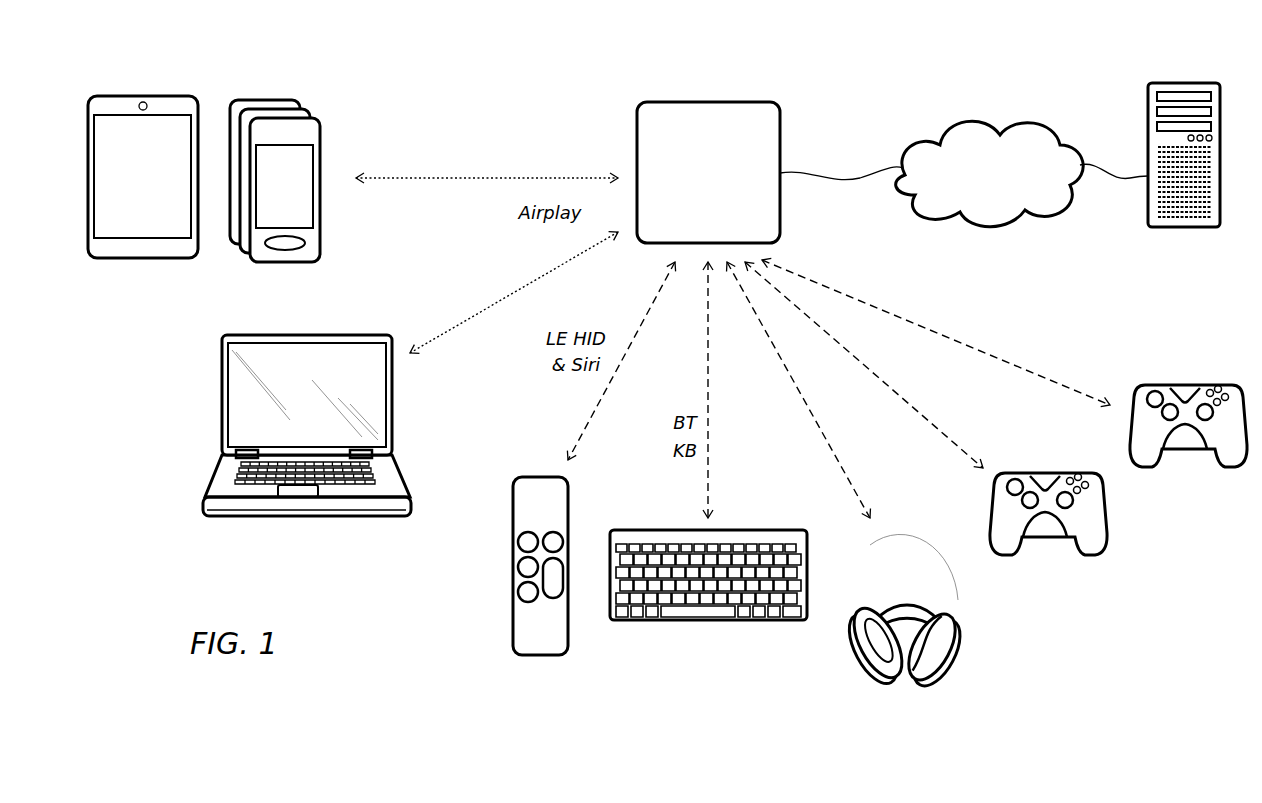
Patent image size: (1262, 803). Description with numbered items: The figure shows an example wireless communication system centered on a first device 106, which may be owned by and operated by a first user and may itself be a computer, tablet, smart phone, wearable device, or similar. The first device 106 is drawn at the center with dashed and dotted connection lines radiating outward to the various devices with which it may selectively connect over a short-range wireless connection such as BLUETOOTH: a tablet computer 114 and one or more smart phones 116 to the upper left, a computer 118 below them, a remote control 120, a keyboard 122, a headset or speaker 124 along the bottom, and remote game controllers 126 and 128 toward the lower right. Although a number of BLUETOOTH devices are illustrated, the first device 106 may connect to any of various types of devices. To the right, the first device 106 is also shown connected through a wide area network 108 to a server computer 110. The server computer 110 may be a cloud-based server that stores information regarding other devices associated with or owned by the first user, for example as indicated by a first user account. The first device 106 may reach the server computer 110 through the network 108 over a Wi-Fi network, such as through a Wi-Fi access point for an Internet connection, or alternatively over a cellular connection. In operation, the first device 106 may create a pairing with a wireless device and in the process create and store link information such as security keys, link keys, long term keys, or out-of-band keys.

The first device 106 is at (705, 101).
The wide area network 108 is at (1018, 118).
The server computer 110 is at (1185, 83).
The tablet computer 114 is at (146, 259).
The smart phones 116 is at (284, 263).
The computer 118 is at (306, 517).
The remote control 120 is at (543, 656).
The keyboard 122 is at (705, 621).
The headset or speaker 124 is at (904, 537).
The remote game controller 126 is at (1048, 538).
The remote game controller 128 is at (1188, 450).